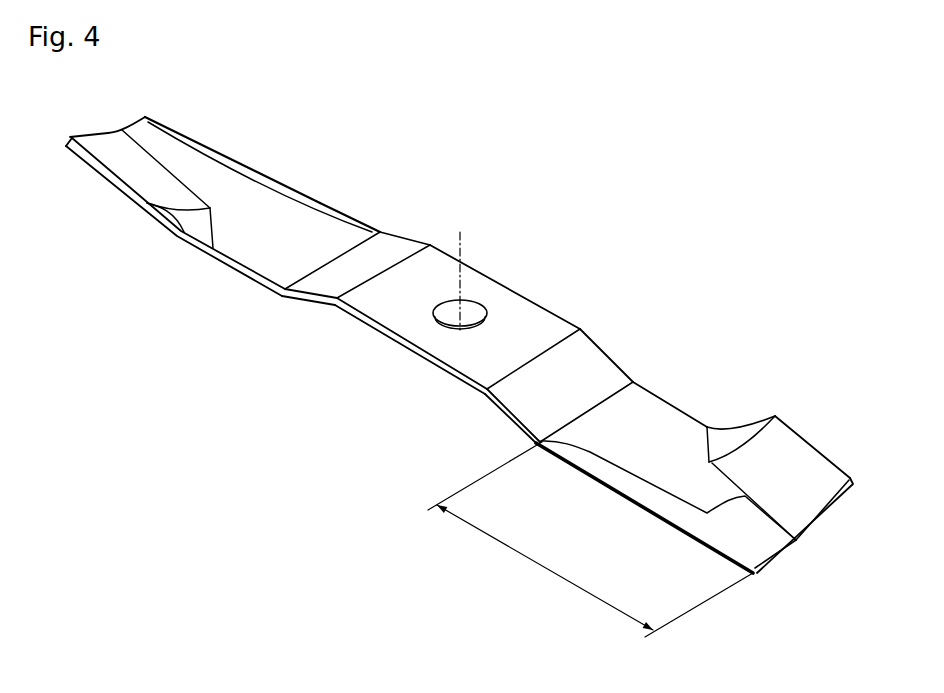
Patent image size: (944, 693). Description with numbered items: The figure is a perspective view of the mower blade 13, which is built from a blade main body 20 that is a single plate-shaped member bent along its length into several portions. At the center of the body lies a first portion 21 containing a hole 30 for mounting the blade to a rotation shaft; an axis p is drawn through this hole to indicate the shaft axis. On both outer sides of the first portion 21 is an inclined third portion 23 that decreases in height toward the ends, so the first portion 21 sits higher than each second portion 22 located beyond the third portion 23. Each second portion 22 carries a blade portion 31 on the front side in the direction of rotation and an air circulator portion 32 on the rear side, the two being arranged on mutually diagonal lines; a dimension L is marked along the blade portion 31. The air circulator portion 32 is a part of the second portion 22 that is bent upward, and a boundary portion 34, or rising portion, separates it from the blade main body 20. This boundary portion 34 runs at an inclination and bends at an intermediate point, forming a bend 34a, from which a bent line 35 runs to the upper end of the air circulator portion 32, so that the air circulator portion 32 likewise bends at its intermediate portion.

The mower blade 13 is at (447, 378).
The blade main body 20 is at (459, 355).
The first portion 21 is at (523, 312).
The second portion 22 is at (323, 232).
The third portion 23 is at (387, 250).
The hole 30 is at (444, 318).
The blade portion 31 is at (263, 182).
The air circulator portion 32 is at (112, 160).
The boundary portion 34 is at (173, 170).
The bend 34a is at (212, 217).
The bent line 35 is at (180, 235).
The rotation axis p is at (462, 243).
The cutting edge length L is at (590, 539).